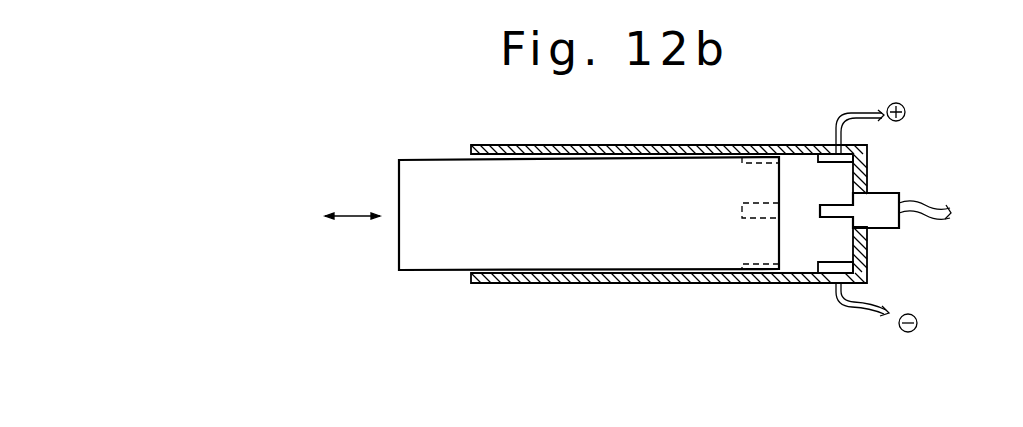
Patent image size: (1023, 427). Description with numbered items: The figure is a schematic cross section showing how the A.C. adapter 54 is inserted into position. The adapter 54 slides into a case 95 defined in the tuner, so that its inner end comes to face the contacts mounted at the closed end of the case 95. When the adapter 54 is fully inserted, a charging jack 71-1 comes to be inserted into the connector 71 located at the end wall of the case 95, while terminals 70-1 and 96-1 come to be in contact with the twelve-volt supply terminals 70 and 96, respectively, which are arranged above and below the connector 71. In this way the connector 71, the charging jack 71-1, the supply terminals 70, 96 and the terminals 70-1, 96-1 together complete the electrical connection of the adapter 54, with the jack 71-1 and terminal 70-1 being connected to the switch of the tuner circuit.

The A.C. adapter 54 is at (436, 271).
The case 95 is at (640, 145).
The 12 V supply terminal 70 is at (792, 145).
The terminal 70-1 is at (867, 156).
The connector 71 is at (783, 207).
The charging jack 71-1 is at (880, 197).
The 12 V supply terminal 96 is at (790, 284).
The terminal 96-1 is at (867, 274).